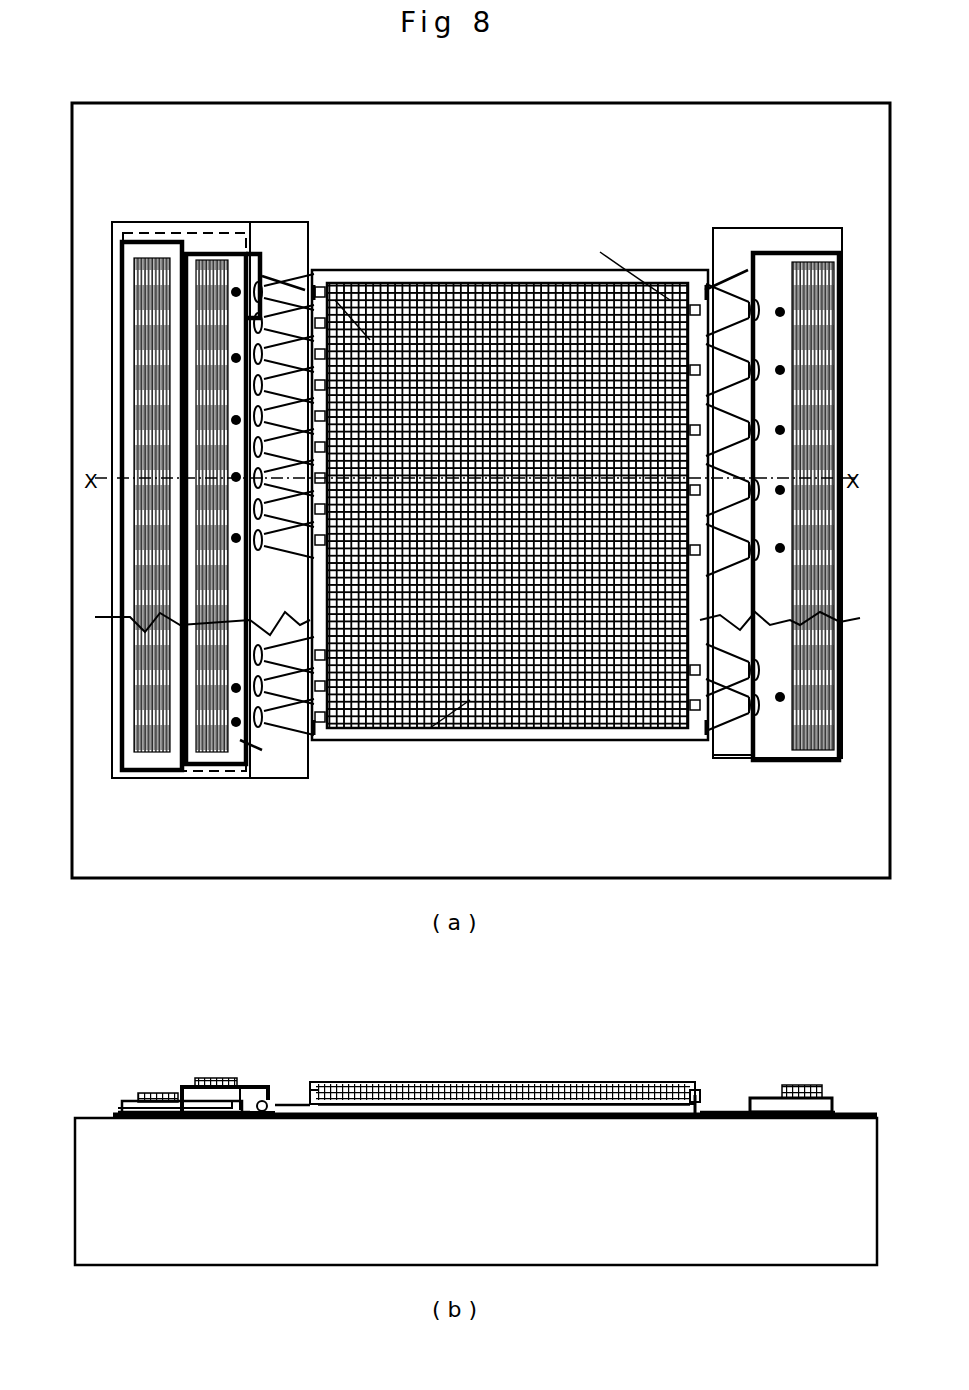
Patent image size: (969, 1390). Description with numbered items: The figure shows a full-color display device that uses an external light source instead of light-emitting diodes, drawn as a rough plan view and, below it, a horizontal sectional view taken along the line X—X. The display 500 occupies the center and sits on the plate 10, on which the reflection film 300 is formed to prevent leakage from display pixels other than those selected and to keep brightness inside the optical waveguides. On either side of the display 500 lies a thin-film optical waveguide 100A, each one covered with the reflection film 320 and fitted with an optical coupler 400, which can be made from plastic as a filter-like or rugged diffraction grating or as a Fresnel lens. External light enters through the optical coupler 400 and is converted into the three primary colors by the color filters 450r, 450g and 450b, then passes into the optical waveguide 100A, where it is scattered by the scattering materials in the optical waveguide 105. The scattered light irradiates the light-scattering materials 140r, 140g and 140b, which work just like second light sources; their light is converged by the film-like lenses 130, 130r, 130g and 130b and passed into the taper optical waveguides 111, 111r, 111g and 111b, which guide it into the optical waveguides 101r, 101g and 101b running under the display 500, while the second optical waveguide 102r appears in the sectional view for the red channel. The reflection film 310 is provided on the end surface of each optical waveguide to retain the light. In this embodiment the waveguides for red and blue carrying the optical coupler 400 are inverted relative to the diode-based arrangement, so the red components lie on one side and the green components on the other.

The plate 10 is at (535, 170).
The reflection film 300 is at (530, 735).
The display 500 is at (495, 275).
The reflection film 320 is at (300, 765).
The reflection film 310 is at (345, 742).
The scattering materials in the optical waveguide 105 is at (120, 738).
The optical waveguide 100A is at (140, 780).
The optical coupler 400 is at (150, 262).
The light-scattering material 140r is at (237, 290).
The light-scattering material 140b is at (232, 728).
The light-scattering material 140g is at (778, 700).
The lens 130 is at (265, 290).
The lens 130r is at (290, 272).
The lens 130b is at (263, 743).
The lens 130g is at (757, 280).
The taper optical waveguide 111r is at (318, 290).
The taper optical waveguide 111b is at (314, 742).
The taper optical waveguide 111g is at (735, 290).
The taper optical waveguide 111 is at (695, 738).
The first optical waveguide 101r is at (335, 300).
The first optical waveguide 101b is at (430, 335).
The first optical waveguide 101g is at (700, 290).
The second optical waveguide 102r is at (318, 1085).
The color filter 450b is at (150, 1120).
The color filter 450r is at (250, 1115).
The color filter 450g is at (805, 1118).